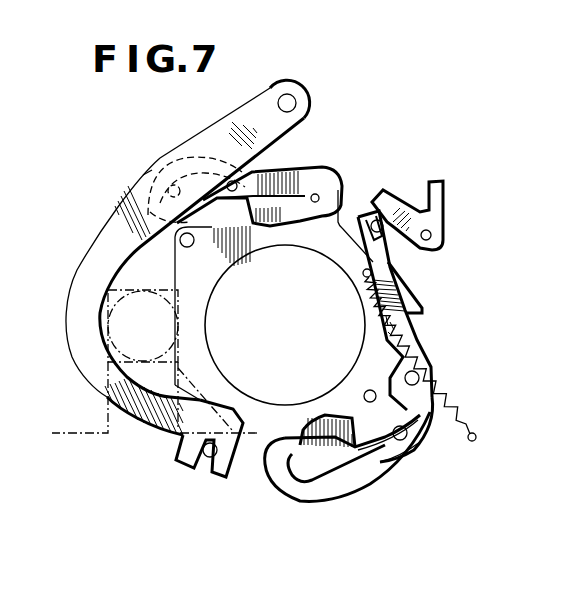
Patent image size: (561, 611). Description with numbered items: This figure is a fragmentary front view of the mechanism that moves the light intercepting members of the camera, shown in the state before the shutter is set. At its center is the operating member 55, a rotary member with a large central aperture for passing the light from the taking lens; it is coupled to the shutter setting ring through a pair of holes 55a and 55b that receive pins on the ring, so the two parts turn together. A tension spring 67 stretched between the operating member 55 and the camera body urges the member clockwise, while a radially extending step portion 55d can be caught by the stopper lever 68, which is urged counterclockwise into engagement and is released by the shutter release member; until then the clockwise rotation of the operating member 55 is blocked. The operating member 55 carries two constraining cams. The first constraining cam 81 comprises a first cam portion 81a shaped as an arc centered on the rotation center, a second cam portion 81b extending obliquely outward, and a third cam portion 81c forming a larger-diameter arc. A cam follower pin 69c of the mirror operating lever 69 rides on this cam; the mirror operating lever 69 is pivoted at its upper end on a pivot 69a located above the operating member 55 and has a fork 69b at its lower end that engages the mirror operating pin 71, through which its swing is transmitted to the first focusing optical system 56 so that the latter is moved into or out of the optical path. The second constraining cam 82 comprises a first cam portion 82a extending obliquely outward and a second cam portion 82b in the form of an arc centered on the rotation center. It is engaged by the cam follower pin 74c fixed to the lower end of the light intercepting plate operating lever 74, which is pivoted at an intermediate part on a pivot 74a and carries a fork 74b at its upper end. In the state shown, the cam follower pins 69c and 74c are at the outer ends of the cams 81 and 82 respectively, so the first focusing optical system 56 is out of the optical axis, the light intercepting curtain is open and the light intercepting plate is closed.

The operating member 55 is at (300, 243).
The hole 55a is at (180, 243).
The hole 55b is at (365, 391).
The radially extending step portion 55d is at (424, 300).
The first focusing optical system 56 is at (107, 326).
The tension spring 67 is at (457, 403).
The stopper lever 68 is at (404, 206).
The mirror operating lever 69 is at (92, 373).
The pivot 69a is at (297, 103).
The fork 69b is at (180, 451).
The cam follower pin 69c is at (150, 172).
The mirror operating pin 71 is at (210, 458).
The light intercepting plate operating lever 74 is at (414, 323).
The pivot 74a is at (434, 370).
The fork 74b is at (393, 242).
The cam follower pin 74c is at (410, 438).
The constraining cam 81 is at (294, 175).
The first cam portion 81a is at (320, 194).
The second cam portion 81b is at (230, 181).
The third cam portion 81c is at (175, 185).
The constraining cam 82 is at (368, 484).
The first cam portion 82a is at (307, 479).
The second cam portion 82b is at (386, 455).